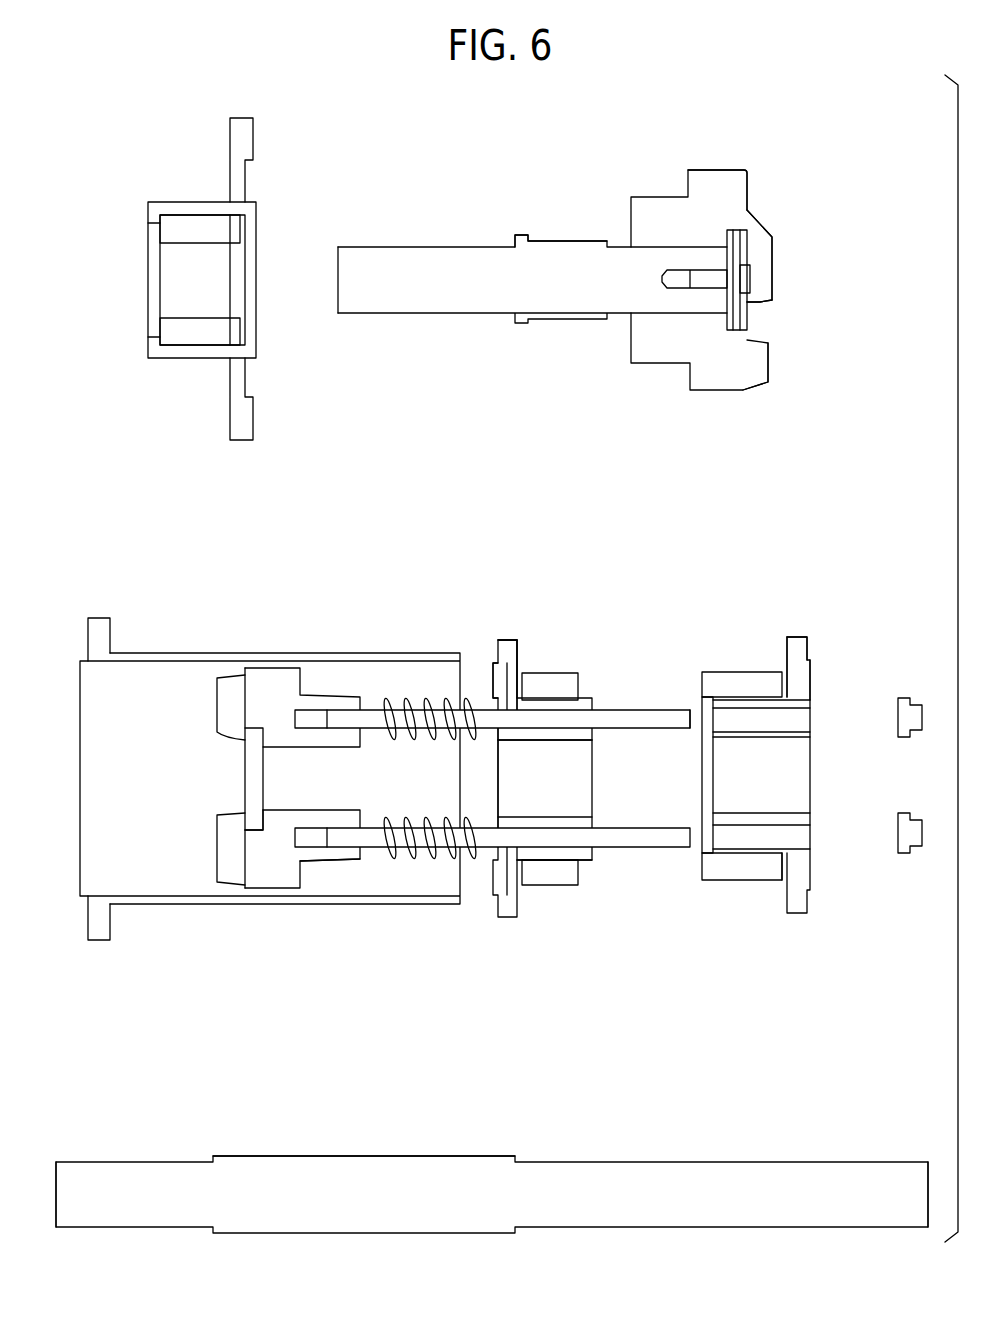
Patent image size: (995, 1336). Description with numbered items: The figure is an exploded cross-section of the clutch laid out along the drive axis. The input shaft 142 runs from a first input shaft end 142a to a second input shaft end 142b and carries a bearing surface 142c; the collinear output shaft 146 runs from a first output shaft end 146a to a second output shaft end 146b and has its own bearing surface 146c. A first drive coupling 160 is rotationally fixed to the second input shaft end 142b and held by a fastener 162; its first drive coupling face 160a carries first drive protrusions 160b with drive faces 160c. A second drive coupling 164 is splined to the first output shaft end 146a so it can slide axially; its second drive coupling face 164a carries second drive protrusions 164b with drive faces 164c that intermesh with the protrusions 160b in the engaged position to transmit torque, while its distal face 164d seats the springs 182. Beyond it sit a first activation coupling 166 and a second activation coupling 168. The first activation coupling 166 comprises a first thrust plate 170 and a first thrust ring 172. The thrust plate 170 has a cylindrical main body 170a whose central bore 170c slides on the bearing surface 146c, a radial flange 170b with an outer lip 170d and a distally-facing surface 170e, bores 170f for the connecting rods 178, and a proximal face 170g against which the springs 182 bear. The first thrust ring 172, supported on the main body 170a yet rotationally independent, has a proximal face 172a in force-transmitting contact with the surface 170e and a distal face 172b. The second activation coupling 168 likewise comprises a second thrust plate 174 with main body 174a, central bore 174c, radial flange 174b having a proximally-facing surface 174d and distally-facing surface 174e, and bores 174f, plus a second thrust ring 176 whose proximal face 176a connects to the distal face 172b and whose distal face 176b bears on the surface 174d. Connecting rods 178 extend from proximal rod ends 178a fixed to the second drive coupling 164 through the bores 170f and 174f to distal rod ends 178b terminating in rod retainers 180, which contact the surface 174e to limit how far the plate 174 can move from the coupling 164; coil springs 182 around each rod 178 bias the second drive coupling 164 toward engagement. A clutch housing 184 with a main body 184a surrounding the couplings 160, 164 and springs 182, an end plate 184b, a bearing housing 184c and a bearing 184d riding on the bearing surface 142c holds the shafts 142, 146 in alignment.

The input shaft 142 is at (522, 291).
The first input shaft end 142a is at (340, 303).
The second input shaft end 142b is at (705, 300).
The bearing surface 142c is at (560, 238).
The output shaft 146 is at (494, 1144).
The first output shaft end 146a is at (72, 1180).
The second output shaft end 146b is at (910, 1180).
The bearing surface 146c is at (415, 1155).
The first drive coupling 160 is at (751, 253).
The first drive coupling face 160a is at (745, 187).
The first drive protrusions 160b is at (772, 228).
The drive faces 160c is at (762, 305).
The fastener 162 is at (755, 273).
The second drive coupling 164 is at (280, 789).
The second drive coupling face 164a is at (240, 875).
The second drive protrusions 164b is at (215, 690).
The drive faces 164c is at (232, 832).
The distal face 164d is at (372, 862).
The first activation coupling 166 is at (536, 744).
The second activation coupling 168 is at (805, 745).
The first thrust plate 170 is at (536, 705).
The main body 170a is at (560, 703).
The radial flange 170b is at (516, 640).
The central bore 170c is at (577, 743).
The outer lip 170d is at (500, 653).
The distally-facing surface 170e is at (518, 657).
The bores 170f is at (523, 730).
The proximal face 170g is at (493, 700).
The first thrust ring 172 is at (590, 911).
The proximal face 172a is at (523, 870).
The distal face 172b is at (588, 869).
The second thrust plate 174 is at (801, 750).
The main body 174a is at (768, 700).
The radial flange 174b is at (808, 654).
The central bore 174c is at (790, 740).
The proximally-facing surface 174d is at (788, 650).
The distally-facing surface 174e is at (813, 688).
The bores 174f is at (797, 723).
The second thrust ring 176 is at (791, 911).
The proximal face 176a is at (698, 870).
The distal face 176b is at (784, 868).
The connecting rods 178 is at (505, 701).
The proximal rod end 178a is at (345, 715).
The distal rod end 178b is at (688, 711).
The rod retainers 180 is at (908, 705).
The springs 182 is at (402, 700).
The clutch housing 184 is at (270, 759).
The main body 184a is at (148, 652).
The end plate 184b is at (253, 145).
The bearing housing 184c is at (202, 203).
The bearing 184d is at (230, 325).